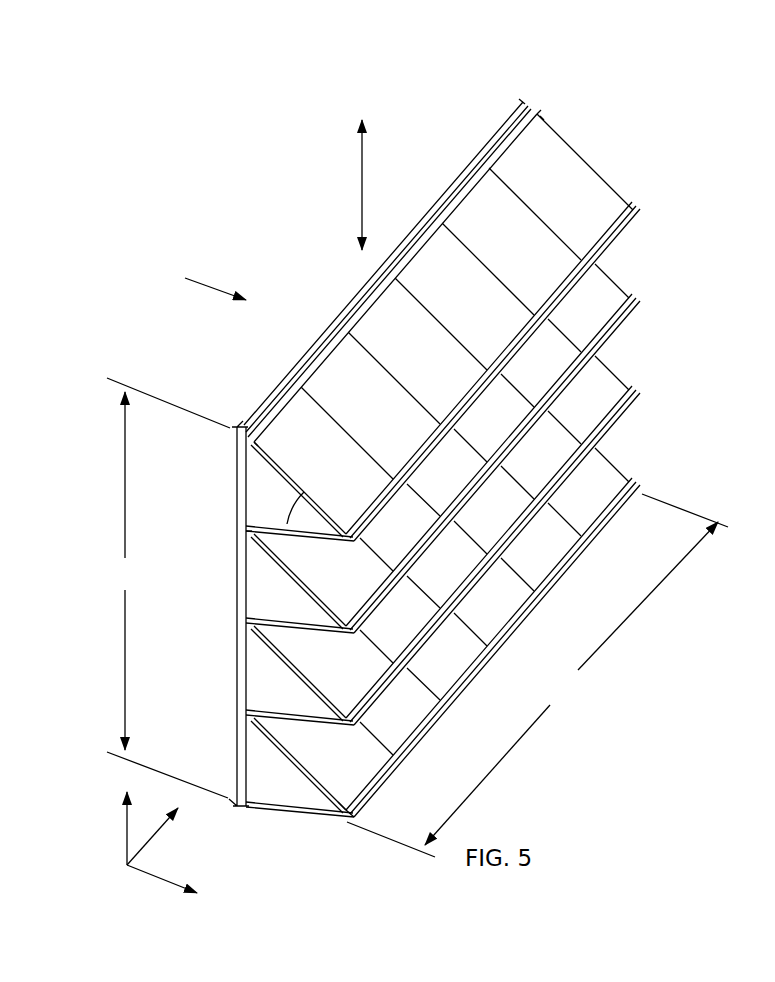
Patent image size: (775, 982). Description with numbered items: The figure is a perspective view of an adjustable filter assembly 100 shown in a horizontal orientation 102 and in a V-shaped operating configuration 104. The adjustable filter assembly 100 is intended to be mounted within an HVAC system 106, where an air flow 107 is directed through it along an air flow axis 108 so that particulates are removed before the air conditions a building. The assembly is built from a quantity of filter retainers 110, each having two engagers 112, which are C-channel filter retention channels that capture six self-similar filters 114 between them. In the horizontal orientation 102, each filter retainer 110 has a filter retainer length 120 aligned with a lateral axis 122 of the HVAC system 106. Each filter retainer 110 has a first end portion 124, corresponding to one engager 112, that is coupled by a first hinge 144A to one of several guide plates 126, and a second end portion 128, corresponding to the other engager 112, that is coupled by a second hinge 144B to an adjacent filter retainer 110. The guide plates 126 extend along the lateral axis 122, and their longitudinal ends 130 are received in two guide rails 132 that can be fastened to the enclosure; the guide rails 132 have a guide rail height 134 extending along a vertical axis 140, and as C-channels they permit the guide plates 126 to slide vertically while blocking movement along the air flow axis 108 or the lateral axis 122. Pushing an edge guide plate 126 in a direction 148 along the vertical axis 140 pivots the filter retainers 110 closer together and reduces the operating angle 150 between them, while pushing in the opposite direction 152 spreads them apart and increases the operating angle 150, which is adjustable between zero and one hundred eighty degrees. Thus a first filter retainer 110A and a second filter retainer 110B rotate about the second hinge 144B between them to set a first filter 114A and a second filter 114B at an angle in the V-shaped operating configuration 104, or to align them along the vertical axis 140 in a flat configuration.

The adjustable filter assembly 100 is at (248, 153).
The horizontal orientation 102 is at (253, 196).
The V-shaped operating configuration 104 is at (172, 490).
The HVAC system 106 is at (200, 106).
The air flow 107 is at (213, 282).
The air flow axis 108 is at (160, 880).
The filter retainer 110 is at (563, 165).
The first filter retainer 110A is at (345, 782).
The second filter retainer 110B is at (318, 812).
The engager 112 is at (557, 125).
The filter 114 is at (549, 203).
The first filter 114A is at (308, 758).
The second filter 114B is at (297, 812).
The filter retainer length 120 is at (537, 675).
The lateral axis 122 is at (148, 845).
The first end portion 124 is at (560, 133).
The guide plate 126 is at (517, 106).
The second end portion 128 is at (637, 193).
The longitudinal end 130 is at (488, 142).
The guide rail 132 is at (247, 503).
The guide rail height 134 is at (162, 588).
The vertical axis 140 is at (127, 835).
The first hinge 144A is at (244, 458).
The second hinge 144B is at (637, 215).
The direction 148 is at (362, 212).
The operating angle 150 is at (240, 495).
The direction 152 is at (362, 150).